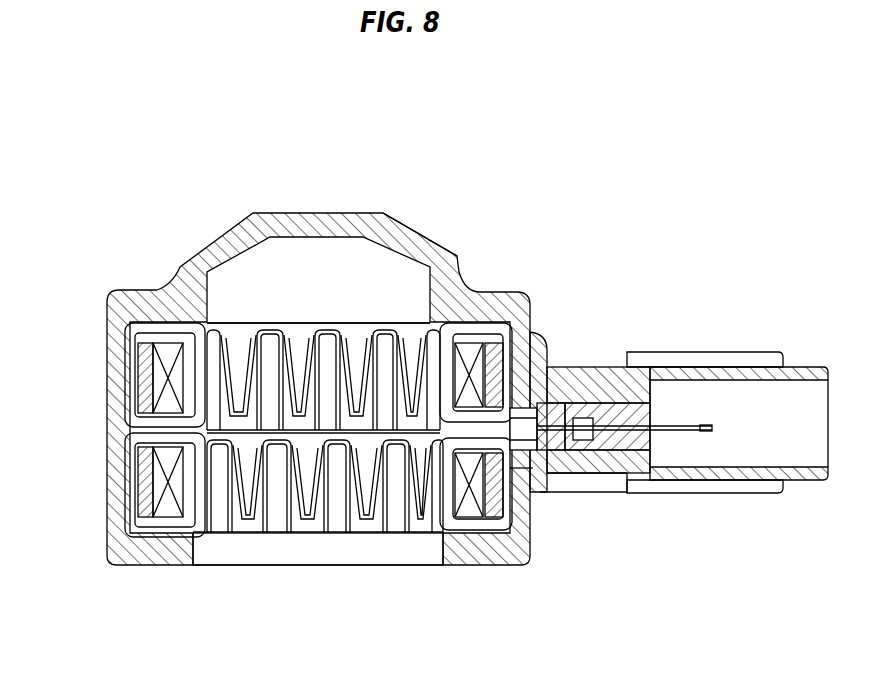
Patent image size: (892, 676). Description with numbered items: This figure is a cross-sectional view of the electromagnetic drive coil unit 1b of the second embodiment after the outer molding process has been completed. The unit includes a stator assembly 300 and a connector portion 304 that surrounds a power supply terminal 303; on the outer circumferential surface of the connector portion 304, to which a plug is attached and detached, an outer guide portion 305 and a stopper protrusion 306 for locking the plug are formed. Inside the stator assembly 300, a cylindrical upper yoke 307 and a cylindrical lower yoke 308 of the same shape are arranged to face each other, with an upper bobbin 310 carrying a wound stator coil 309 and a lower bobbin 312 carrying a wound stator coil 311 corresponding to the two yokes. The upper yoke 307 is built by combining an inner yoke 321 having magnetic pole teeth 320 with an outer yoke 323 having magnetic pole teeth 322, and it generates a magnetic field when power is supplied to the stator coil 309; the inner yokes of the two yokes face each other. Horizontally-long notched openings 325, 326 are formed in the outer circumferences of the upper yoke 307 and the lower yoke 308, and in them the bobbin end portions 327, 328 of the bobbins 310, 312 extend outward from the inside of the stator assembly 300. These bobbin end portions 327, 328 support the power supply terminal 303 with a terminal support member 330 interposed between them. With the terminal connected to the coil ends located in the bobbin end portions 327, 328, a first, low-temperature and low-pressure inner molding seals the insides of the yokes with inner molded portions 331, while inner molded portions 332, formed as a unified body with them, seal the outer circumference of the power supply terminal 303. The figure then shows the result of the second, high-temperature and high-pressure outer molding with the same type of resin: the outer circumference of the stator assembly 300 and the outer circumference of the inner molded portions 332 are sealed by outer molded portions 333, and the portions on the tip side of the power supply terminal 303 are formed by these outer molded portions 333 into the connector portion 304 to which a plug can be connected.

The electromagnetic drive coil unit 1b is at (600, 220).
The stator assembly 300 is at (220, 304).
The power supply terminal 303 is at (653, 420).
The connector portion 304 is at (820, 480).
The outer guide portion 305 is at (686, 352).
The stopper protrusion 306 is at (722, 365).
The upper yoke 307 is at (302, 355).
The lower yoke 308 is at (268, 532).
The stator coil 309 is at (162, 375).
The upper bobbin 310 is at (447, 370).
The stator coil 311 is at (158, 487).
The lower bobbin 312 is at (448, 493).
The magnetic pole teeth 320 is at (275, 404).
The inner yoke 321 is at (207, 322).
The magnetic pole teeth 322 is at (325, 384).
The outer yoke 323 is at (300, 347).
The notched opening 325 is at (528, 370).
The notched opening 326 is at (537, 495).
The bobbin end portion 327 is at (542, 375).
The bobbin end portion 328 is at (545, 495).
The terminal support member 330 is at (557, 495).
The inner molded portion 331 is at (510, 565).
The inner molded portion 332 is at (585, 402).
The outer molded portion 333 is at (420, 243).